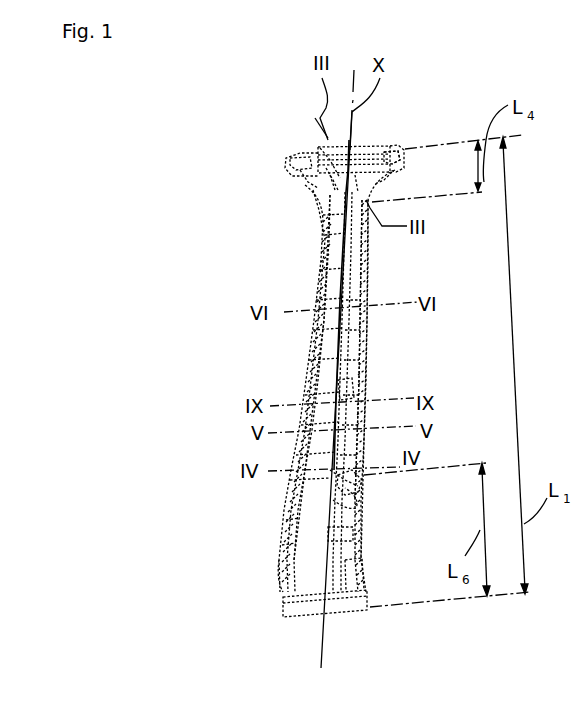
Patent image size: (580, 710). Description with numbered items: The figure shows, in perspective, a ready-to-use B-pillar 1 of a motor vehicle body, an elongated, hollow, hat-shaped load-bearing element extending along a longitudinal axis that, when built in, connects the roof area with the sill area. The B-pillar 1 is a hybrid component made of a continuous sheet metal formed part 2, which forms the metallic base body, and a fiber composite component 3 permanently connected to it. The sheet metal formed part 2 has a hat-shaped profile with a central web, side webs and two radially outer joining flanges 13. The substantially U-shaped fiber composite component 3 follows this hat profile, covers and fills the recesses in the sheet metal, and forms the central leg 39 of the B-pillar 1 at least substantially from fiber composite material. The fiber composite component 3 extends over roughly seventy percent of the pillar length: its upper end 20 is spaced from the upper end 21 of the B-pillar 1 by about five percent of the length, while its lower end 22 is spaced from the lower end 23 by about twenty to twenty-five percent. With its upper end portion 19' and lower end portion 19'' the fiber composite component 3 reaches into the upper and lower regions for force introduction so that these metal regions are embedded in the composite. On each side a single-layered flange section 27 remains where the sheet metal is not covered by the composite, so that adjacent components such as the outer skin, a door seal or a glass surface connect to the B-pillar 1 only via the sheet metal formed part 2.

The B-pillar 1 is at (312, 242).
The sheet metal formed part 2 is at (368, 182).
The fiber composite component 3 is at (346, 271).
The joining flanges 13 is at (363, 288).
The upper end portion 19' is at (275, 137).
The lower end portion 19'' is at (283, 508).
The upper end 20 is at (357, 162).
The upper end 21 is at (336, 162).
The lower end 22 is at (333, 484).
The lower end 23 is at (316, 616).
The single-layered flange section 27 is at (303, 380).
The central leg 39 is at (345, 388).